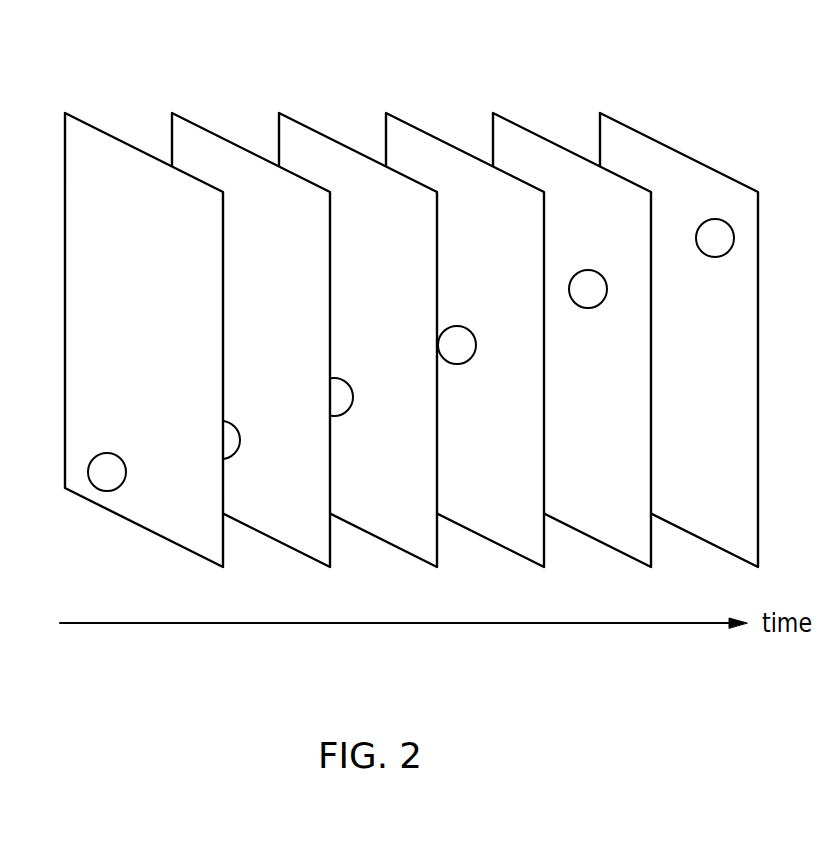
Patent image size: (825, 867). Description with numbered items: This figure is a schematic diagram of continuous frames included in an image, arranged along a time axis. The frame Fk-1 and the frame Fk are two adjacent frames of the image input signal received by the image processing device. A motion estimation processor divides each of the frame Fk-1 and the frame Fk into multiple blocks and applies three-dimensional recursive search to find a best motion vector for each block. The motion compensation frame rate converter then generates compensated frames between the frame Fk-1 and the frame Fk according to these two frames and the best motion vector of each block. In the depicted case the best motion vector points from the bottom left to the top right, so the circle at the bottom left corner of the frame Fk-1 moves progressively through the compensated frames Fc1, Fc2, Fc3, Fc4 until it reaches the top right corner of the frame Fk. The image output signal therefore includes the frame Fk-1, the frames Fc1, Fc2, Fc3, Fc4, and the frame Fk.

The frame Fk-1 is at (82, 119).
The compensated frame Fc1 is at (189, 119).
The compensated frame Fc2 is at (296, 119).
The compensated frame Fc3 is at (403, 119).
The compensated frame Fc4 is at (510, 119).
The frame Fk is at (617, 119).